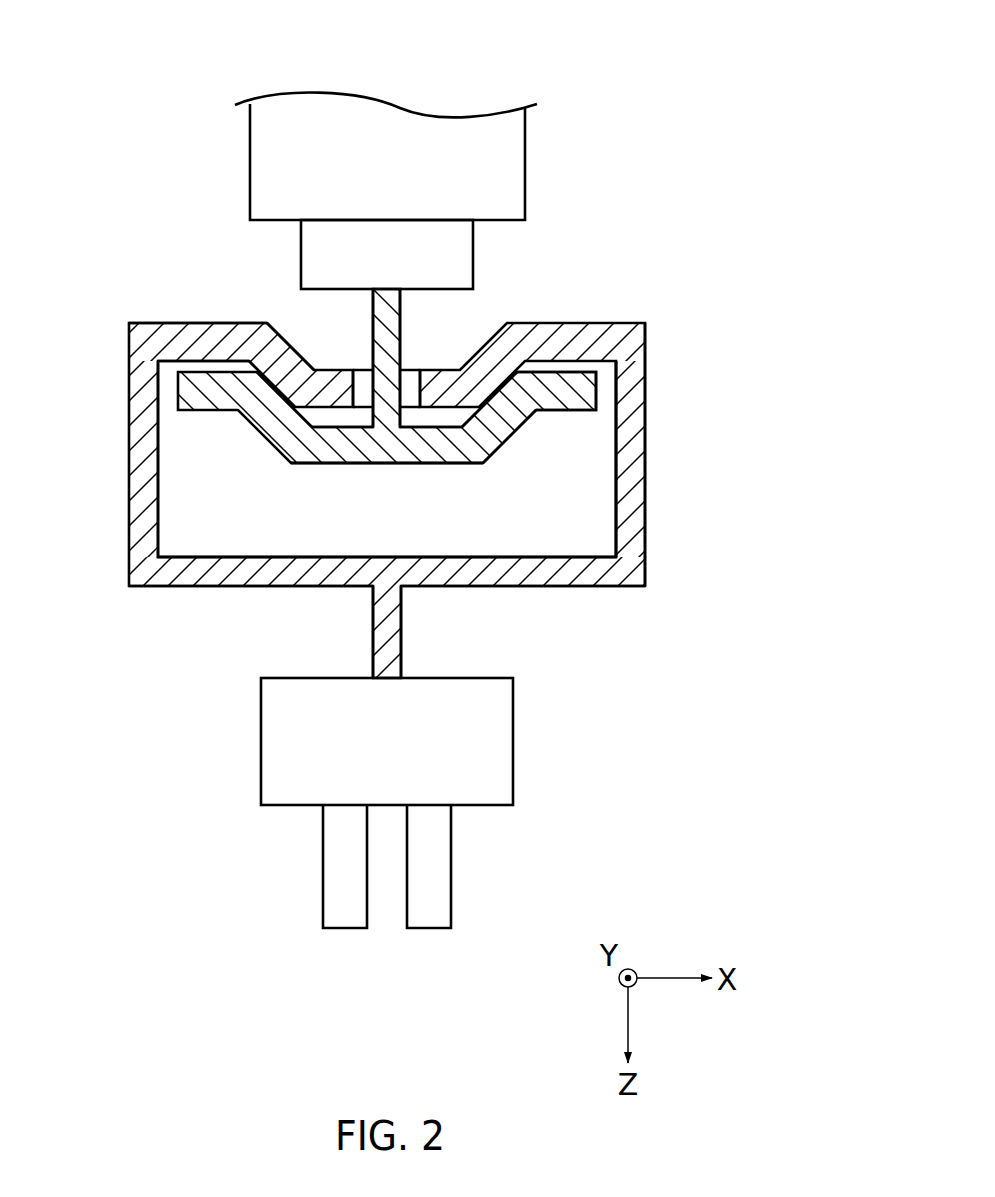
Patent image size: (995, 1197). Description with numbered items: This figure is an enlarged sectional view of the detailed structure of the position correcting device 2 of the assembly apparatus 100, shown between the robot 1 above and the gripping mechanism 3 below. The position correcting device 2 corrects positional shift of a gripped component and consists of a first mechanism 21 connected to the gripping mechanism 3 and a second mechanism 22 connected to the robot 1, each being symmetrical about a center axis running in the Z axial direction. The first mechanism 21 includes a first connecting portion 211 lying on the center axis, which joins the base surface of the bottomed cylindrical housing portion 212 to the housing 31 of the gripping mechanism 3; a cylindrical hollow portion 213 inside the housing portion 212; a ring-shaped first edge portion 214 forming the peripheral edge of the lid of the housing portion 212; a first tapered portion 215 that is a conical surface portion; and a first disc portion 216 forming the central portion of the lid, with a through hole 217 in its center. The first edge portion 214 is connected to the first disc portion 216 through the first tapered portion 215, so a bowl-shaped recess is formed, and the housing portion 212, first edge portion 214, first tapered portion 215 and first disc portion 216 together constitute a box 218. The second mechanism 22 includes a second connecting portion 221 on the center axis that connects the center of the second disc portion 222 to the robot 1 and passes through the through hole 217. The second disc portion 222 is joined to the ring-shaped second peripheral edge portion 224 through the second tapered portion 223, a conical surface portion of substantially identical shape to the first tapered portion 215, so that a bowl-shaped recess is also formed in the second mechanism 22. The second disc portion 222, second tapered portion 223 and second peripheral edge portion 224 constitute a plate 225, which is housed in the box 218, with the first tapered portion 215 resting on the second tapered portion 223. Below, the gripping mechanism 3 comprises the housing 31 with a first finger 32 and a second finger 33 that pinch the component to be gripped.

The assembly apparatus 100 is at (484, 76).
The robot 1 is at (525, 170).
The position correcting device 2 is at (712, 425).
The first mechanism 21 is at (660, 560).
The first connecting portion 211 is at (402, 620).
The housing portion 212 is at (128, 546).
The hollow portion 213 is at (186, 473).
The first edge portion 214 is at (153, 322).
The first tapered portion 215 is at (292, 330).
The first disc portion 216 is at (338, 368).
The through hole 217 is at (411, 375).
The box 218 is at (664, 326).
The second mechanism 22 is at (308, 484).
The second connecting portion 221 is at (402, 302).
The second disc portion 222 is at (410, 465).
The second tapered portion 223 is at (500, 447).
The second peripheral edge portion 224 is at (552, 412).
The plate 225 is at (361, 474).
The gripping mechanism 3 is at (574, 796).
The housing 31 is at (514, 722).
The first finger 32 is at (323, 867).
The second finger 33 is at (451, 866).